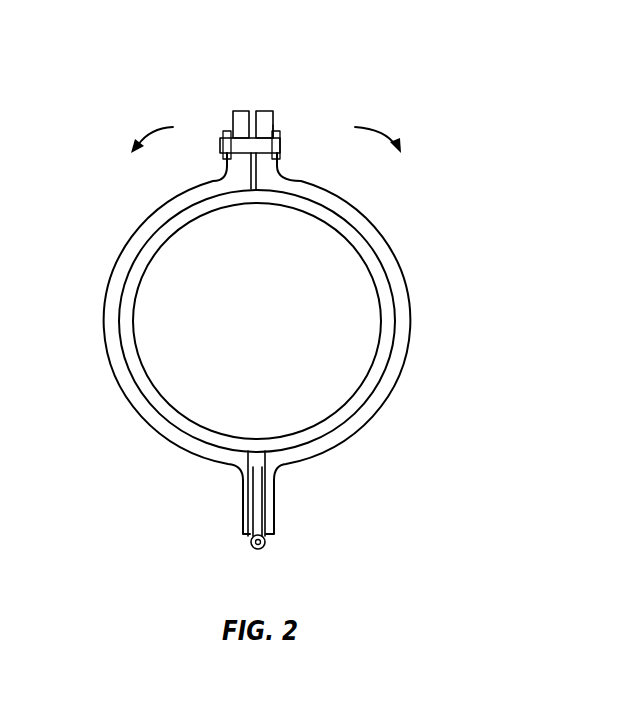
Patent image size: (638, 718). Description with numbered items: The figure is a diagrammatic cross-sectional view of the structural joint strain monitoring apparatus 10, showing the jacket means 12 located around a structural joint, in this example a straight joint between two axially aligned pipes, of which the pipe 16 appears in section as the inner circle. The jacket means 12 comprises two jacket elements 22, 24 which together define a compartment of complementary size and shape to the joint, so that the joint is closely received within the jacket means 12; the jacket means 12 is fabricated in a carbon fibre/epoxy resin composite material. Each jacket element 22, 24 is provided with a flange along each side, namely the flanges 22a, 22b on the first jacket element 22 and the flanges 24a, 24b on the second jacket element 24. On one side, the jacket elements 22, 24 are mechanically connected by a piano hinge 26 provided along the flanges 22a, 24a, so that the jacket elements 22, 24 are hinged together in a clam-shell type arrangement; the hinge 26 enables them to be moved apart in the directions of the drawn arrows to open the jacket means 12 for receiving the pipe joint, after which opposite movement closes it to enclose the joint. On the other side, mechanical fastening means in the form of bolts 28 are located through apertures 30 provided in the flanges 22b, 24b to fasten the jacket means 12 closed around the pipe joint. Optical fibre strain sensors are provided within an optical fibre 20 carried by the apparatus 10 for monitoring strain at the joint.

The structural joint strain monitoring apparatus 10 is at (445, 85).
The jacket means 12 is at (112, 218).
The pipe 16 is at (317, 432).
The optical fibre 20 is at (278, 174).
The jacket element 22 is at (363, 228).
The flange 22a is at (270, 502).
The flange 22b is at (264, 112).
The jacket element 24 is at (117, 370).
The flange 24a is at (243, 492).
The flange 24b is at (239, 120).
The piano hinge 26 is at (252, 544).
The bolt 28 is at (283, 146).
The aperture 30 is at (277, 132).